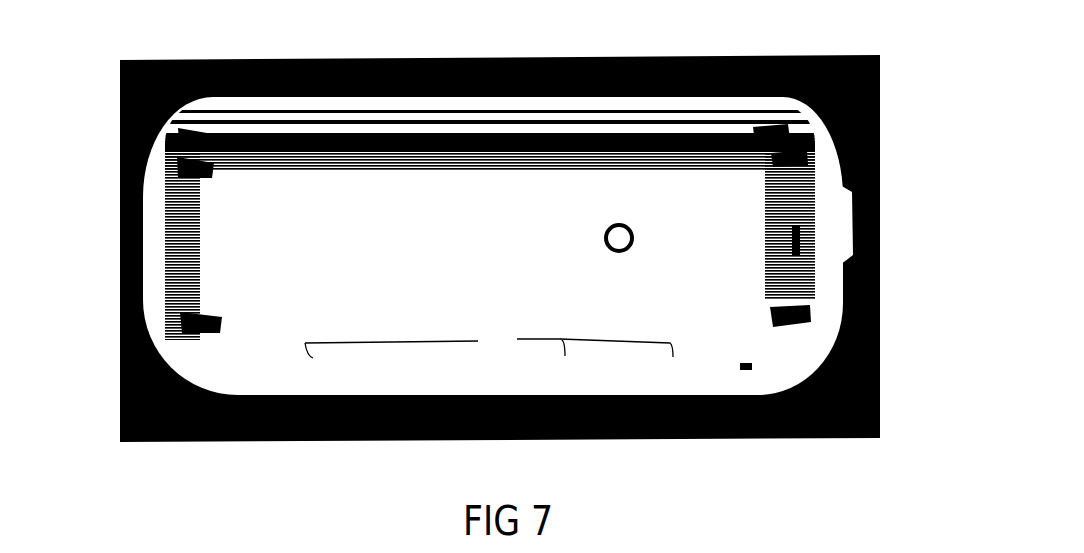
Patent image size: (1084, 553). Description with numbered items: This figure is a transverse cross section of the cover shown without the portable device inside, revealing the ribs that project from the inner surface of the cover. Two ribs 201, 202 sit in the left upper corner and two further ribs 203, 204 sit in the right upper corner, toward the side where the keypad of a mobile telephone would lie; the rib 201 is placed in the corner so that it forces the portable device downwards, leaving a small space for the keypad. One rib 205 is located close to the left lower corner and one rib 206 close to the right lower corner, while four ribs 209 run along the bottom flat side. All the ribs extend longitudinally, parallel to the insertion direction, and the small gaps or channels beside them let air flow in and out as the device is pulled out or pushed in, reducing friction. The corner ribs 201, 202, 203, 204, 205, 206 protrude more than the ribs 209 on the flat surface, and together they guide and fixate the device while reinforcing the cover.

The rib 201 is at (186, 130).
The rib 202 is at (178, 167).
The rib 203 is at (176, 323).
The rib 204 is at (792, 128).
The rib 205 is at (813, 157).
The rib 206 is at (810, 318).
The ribs 209 is at (489, 343).